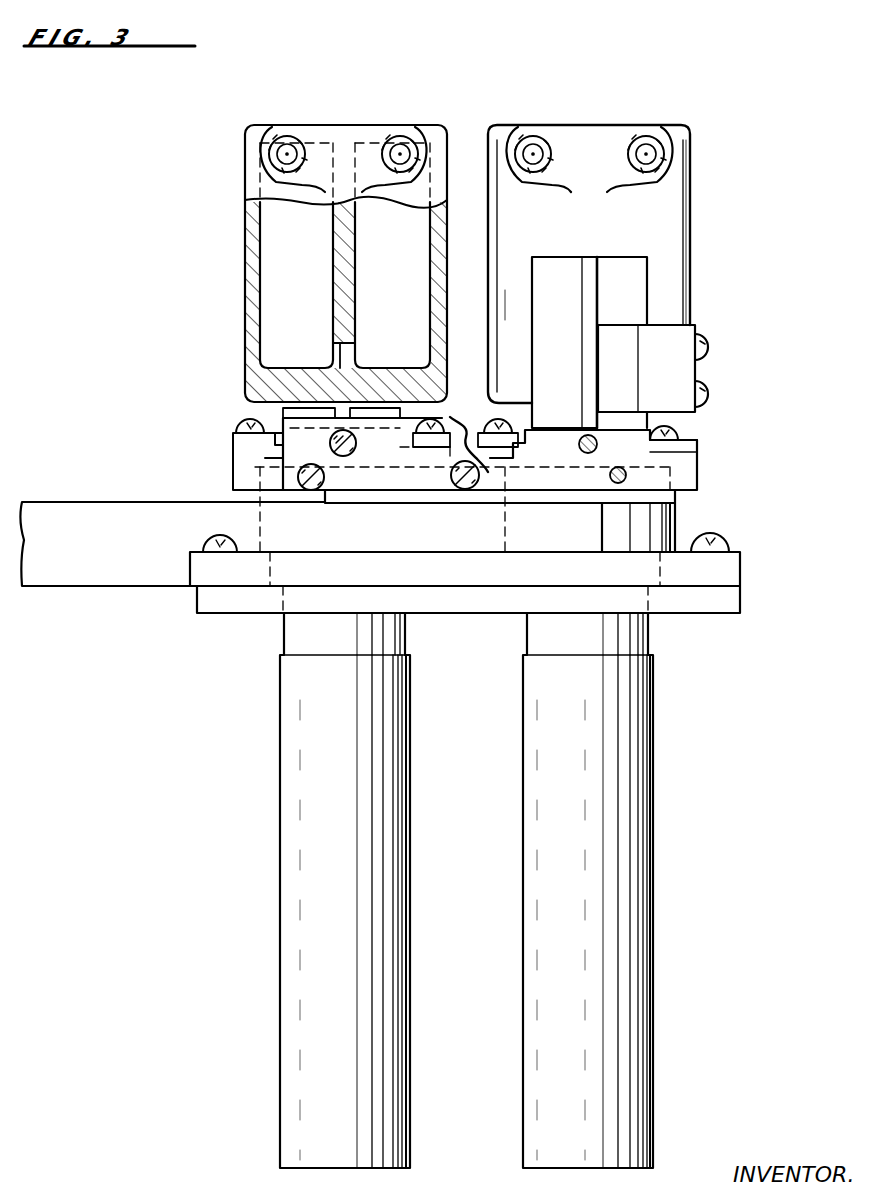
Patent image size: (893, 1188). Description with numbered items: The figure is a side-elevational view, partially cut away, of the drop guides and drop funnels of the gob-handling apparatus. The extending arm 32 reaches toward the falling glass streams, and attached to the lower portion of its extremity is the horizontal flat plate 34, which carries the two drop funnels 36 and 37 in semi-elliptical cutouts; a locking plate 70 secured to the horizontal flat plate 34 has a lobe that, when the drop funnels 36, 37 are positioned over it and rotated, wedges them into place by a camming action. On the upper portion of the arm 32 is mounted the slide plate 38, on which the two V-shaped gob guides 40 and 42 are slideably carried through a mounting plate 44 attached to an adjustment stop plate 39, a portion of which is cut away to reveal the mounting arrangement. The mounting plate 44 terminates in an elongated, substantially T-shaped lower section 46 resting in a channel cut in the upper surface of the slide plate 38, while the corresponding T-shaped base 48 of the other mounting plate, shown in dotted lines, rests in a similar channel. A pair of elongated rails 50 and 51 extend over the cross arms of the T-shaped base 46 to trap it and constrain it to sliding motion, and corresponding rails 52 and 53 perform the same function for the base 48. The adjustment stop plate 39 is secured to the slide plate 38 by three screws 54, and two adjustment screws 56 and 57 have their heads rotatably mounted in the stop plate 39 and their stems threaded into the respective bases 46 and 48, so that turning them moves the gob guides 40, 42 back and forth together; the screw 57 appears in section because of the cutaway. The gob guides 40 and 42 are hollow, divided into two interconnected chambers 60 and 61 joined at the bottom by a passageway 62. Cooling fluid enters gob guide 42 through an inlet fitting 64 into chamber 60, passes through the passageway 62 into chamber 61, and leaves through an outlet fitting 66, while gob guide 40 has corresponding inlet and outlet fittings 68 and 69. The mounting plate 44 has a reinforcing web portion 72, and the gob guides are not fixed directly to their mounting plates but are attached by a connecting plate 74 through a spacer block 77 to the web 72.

The extending arm 32 is at (42, 592).
The horizontal flat plate 34 is at (742, 602).
The drop funnel 36 is at (640, 938).
The drop funnel 37 is at (290, 930).
The slide plate 38 is at (697, 482).
The adjustment stop plate 39 is at (374, 490).
The V-shaped gob guide 40 is at (690, 182).
The V-shaped gob guide 42 is at (246, 206).
The mounting plate 44 is at (640, 268).
The lower section 46 is at (700, 418).
The T-shaped base 48 is at (283, 425).
The elongated rail 50 is at (688, 442).
The elongated rail 51 is at (476, 437).
The elongated rail 52 is at (238, 437).
The elongated rail 53 is at (451, 417).
The screw 54 is at (298, 478).
The adjustment screw 56 is at (330, 444).
The adjustment screw 57 is at (597, 446).
The chamber 60 is at (402, 271).
The chamber 61 is at (305, 271).
The passageway 62 is at (340, 356).
The inlet fitting 64 is at (403, 148).
The outlet fitting 66 is at (290, 148).
The inlet fitting 68 is at (649, 148).
The outlet fitting 69 is at (536, 148).
The locking plate 70 is at (190, 562).
The reinforcing web portion 72 is at (595, 296).
The connecting plate 74 is at (660, 336).
The spacer block 77 is at (618, 338).